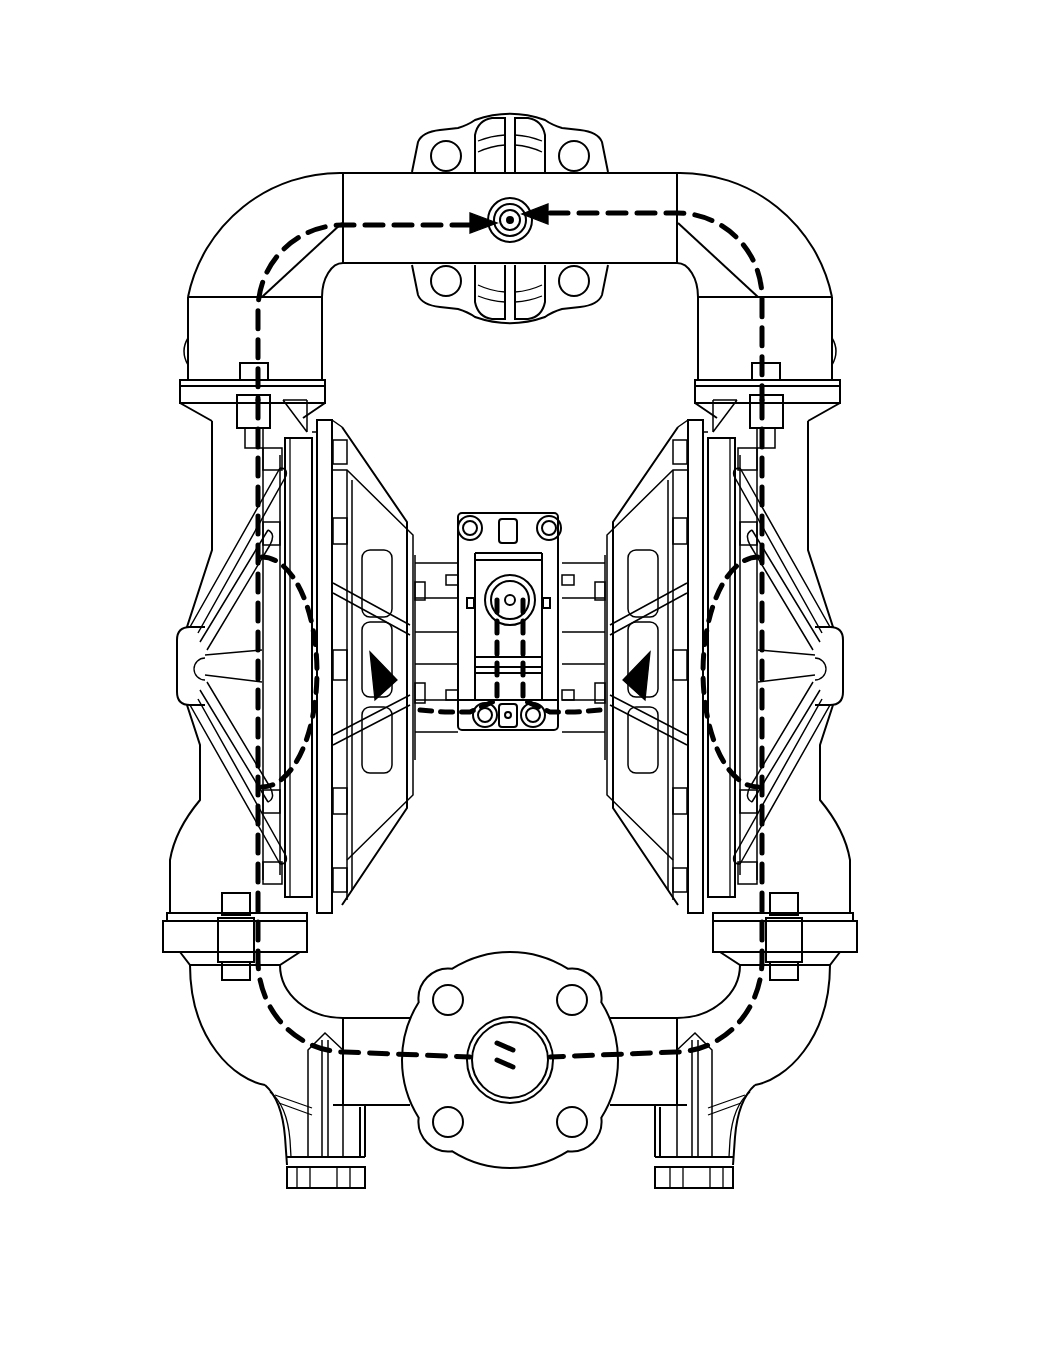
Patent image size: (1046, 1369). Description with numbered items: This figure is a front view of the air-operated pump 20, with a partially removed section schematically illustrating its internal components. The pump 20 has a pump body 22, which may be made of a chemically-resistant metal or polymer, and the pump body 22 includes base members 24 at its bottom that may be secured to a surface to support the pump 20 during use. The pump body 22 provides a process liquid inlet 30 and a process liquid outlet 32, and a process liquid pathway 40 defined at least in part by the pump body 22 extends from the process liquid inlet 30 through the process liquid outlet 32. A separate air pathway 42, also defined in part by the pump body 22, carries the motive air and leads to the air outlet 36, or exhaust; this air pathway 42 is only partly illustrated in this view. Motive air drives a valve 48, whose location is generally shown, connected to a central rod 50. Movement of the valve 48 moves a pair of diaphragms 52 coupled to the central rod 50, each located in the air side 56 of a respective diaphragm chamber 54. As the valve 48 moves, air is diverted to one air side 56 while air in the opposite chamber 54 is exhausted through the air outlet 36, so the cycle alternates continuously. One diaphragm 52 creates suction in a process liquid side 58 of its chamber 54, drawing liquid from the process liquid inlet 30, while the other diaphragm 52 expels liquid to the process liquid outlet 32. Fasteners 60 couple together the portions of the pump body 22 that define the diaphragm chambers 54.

The air-operated pump 20 is at (296, 136).
The pump body 22 is at (775, 232).
The base members 24 is at (720, 1162).
The process liquid inlet 30 is at (512, 1103).
The process liquid outlet 32 is at (602, 122).
The air outlet 36 is at (508, 518).
The process liquid pathway 40 is at (262, 772).
The air pathway 42 is at (462, 714).
The valve 48 is at (481, 536).
The central rod 50 is at (348, 600).
The diaphragm 52 is at (333, 880).
The diaphragm chamber 54 is at (214, 723).
The air side 56 is at (345, 748).
The process liquid side 58 is at (262, 628).
The fasteners 60 is at (762, 540).